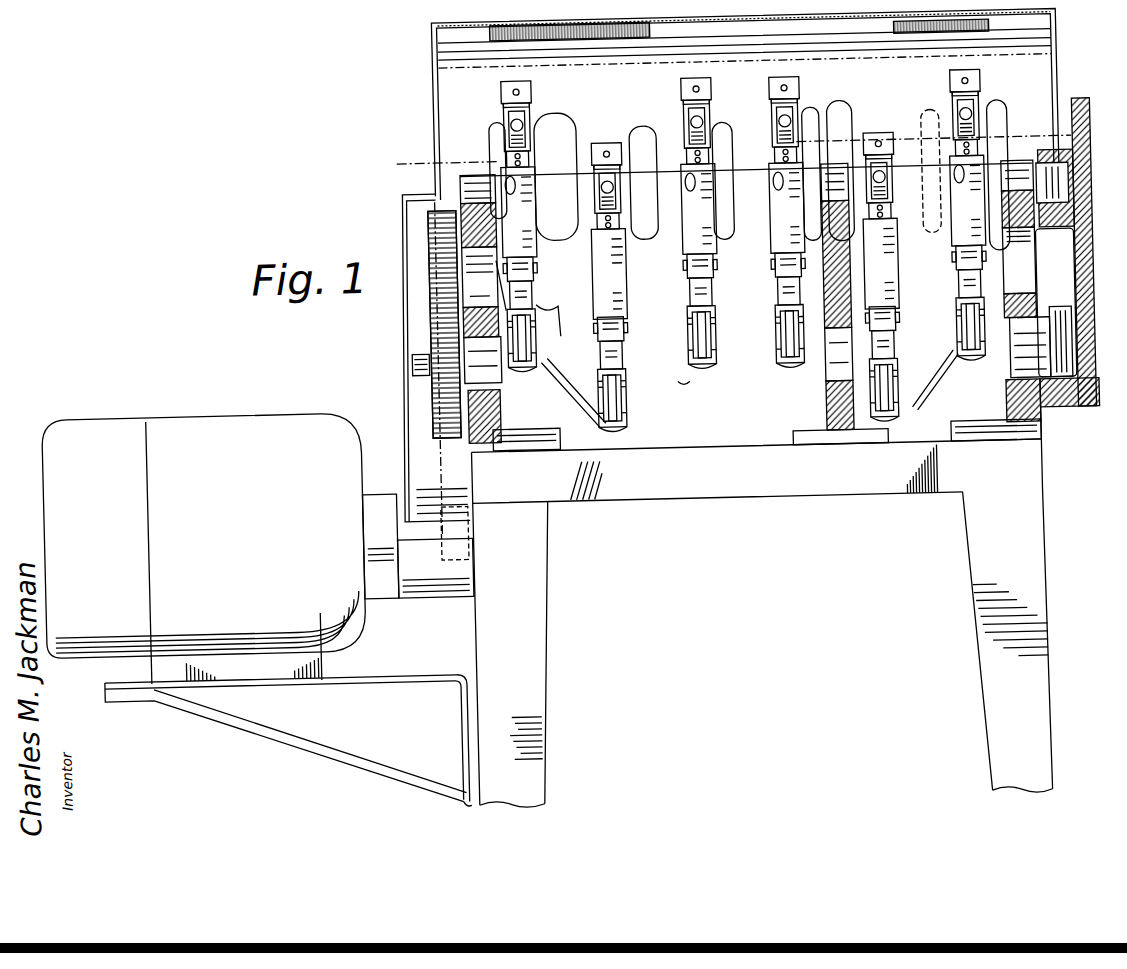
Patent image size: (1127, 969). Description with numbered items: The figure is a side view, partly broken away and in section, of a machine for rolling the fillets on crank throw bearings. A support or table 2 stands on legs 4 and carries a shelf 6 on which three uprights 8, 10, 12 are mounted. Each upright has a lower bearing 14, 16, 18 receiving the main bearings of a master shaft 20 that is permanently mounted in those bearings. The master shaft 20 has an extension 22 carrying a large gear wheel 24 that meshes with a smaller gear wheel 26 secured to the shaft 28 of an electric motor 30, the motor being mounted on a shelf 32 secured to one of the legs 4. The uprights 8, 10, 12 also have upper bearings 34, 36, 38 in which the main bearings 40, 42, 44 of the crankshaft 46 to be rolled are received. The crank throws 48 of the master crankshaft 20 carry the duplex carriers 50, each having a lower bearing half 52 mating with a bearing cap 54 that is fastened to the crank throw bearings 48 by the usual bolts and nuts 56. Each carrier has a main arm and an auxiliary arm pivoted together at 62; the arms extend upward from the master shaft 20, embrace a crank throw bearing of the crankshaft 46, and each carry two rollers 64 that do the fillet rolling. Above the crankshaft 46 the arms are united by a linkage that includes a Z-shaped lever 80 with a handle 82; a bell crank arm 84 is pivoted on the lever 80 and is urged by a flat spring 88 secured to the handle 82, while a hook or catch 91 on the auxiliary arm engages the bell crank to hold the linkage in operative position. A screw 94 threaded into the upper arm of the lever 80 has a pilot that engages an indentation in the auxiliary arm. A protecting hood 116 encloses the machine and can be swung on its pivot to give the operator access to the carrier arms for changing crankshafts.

The support or table 2 is at (520, 573).
The legs 4 is at (520, 638).
The shelf 6 is at (766, 474).
The upright 8 is at (1027, 417).
The upright 10 is at (831, 405).
The upright 12 is at (481, 447).
The bearing 14 is at (1039, 360).
The bearing 16 is at (832, 357).
The bearing 18 is at (479, 334).
The master shaft 20 is at (681, 382).
The extension 22 is at (418, 357).
The large gear wheel 24 is at (445, 310).
The smaller gear wheel 26 is at (456, 540).
The shaft 28 is at (402, 517).
The electric motor 30 is at (252, 414).
The shelf 32 is at (340, 748).
The upper bearing 34 is at (1036, 140).
The upper bearing 36 is at (857, 146).
The upper bearing 38 is at (471, 181).
The main bearing 40 is at (1051, 120).
The main bearing 42 is at (828, 155).
The main bearing 44 is at (486, 144).
The crankshaft 46 is at (923, 159).
The crank throws 48 is at (547, 310).
The duplex carriers 50 is at (604, 272).
The lower bearing half 52 is at (534, 325).
The bearing cap 54 is at (539, 348).
The bolts and nuts 56 is at (529, 358).
The pivot 62 is at (621, 325).
The rollers 64 is at (515, 180).
The Z-shaped lever 80 is at (708, 92).
The handle 82 is at (714, 112).
The bell crank arm 84 is at (534, 120).
The flat spring 88 is at (704, 136).
The hook or catch 91 is at (527, 157).
The screw 94 is at (523, 88).
The protecting hood 116 is at (438, 58).